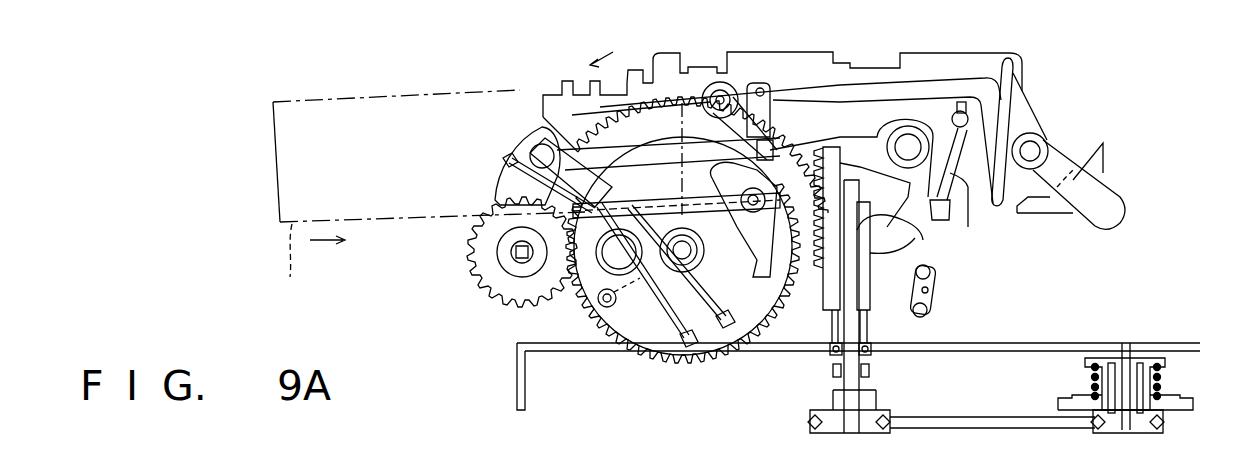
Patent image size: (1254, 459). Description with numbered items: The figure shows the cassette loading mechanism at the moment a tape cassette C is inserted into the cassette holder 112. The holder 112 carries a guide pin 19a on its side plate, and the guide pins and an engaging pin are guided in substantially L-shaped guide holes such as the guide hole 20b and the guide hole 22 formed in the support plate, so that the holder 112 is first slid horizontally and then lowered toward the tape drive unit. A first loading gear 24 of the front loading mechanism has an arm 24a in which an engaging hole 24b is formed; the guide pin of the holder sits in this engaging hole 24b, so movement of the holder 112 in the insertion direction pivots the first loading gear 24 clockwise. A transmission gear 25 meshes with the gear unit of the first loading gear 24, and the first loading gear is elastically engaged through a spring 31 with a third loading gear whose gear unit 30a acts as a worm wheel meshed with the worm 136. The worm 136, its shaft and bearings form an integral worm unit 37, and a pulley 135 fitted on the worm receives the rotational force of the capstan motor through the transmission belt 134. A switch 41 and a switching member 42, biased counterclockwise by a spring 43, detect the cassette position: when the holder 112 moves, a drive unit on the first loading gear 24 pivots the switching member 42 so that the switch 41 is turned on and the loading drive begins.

The cassette holder 112 is at (543, 113).
The tape cassette C is at (314, 264).
The gear unit 30a is at (541, 120).
The guide hole 22 is at (918, 73).
The guide hole 20b is at (790, 137).
The engaging hole 24b is at (600, 180).
The guide pin 19a is at (540, 157).
The arm 24a is at (500, 177).
The transmission gear 25 is at (477, 270).
The first loading gear 24 is at (657, 367).
The spring 31 is at (667, 310).
The worm 136 is at (827, 297).
The worm unit 37 is at (877, 327).
The pulley 135 is at (810, 423).
The transmission belt 134 is at (967, 420).
The switch 41 is at (943, 290).
The switching member 42 is at (910, 237).
The spring 43 is at (969, 200).